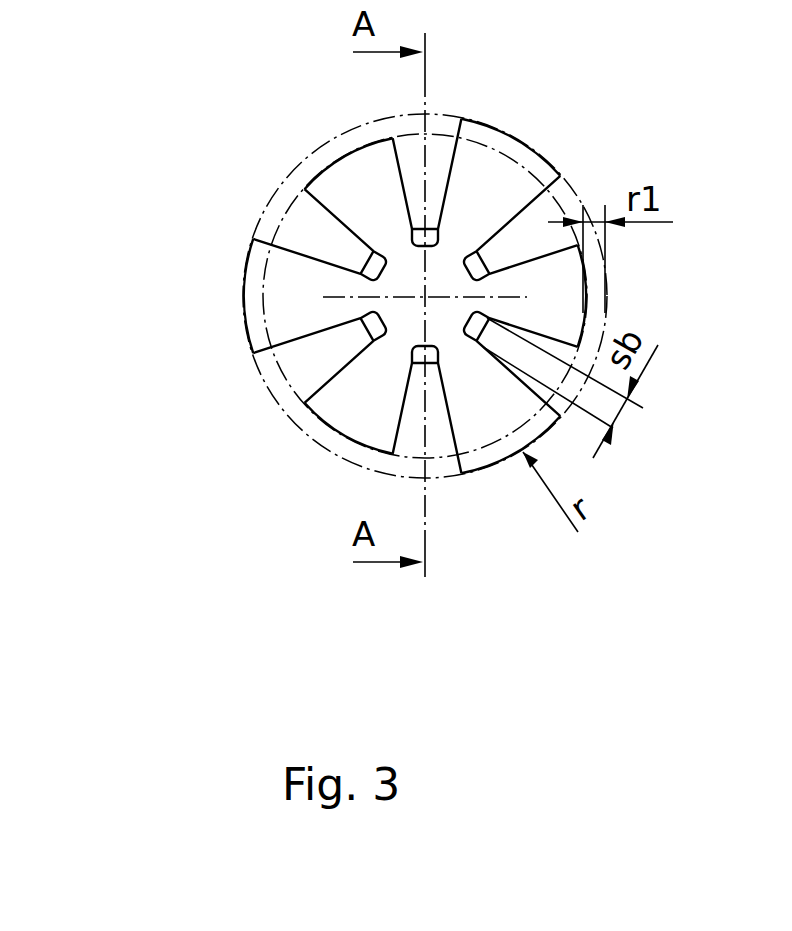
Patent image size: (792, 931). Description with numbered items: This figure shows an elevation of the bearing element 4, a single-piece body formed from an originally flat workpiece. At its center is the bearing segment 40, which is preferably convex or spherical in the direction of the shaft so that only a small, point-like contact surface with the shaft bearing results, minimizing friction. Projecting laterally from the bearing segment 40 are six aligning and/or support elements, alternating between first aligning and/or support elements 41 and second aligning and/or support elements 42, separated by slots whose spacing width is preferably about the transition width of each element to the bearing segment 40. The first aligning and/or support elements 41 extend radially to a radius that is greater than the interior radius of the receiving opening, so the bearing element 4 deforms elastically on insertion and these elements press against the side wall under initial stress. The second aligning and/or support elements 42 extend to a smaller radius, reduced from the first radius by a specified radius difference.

The bearing element 4 is at (356, 296).
The central bearing segment 40 is at (461, 305).
The first aligning and/or support elements 41 is at (409, 340).
The second aligning and/or support elements 42 is at (468, 273).